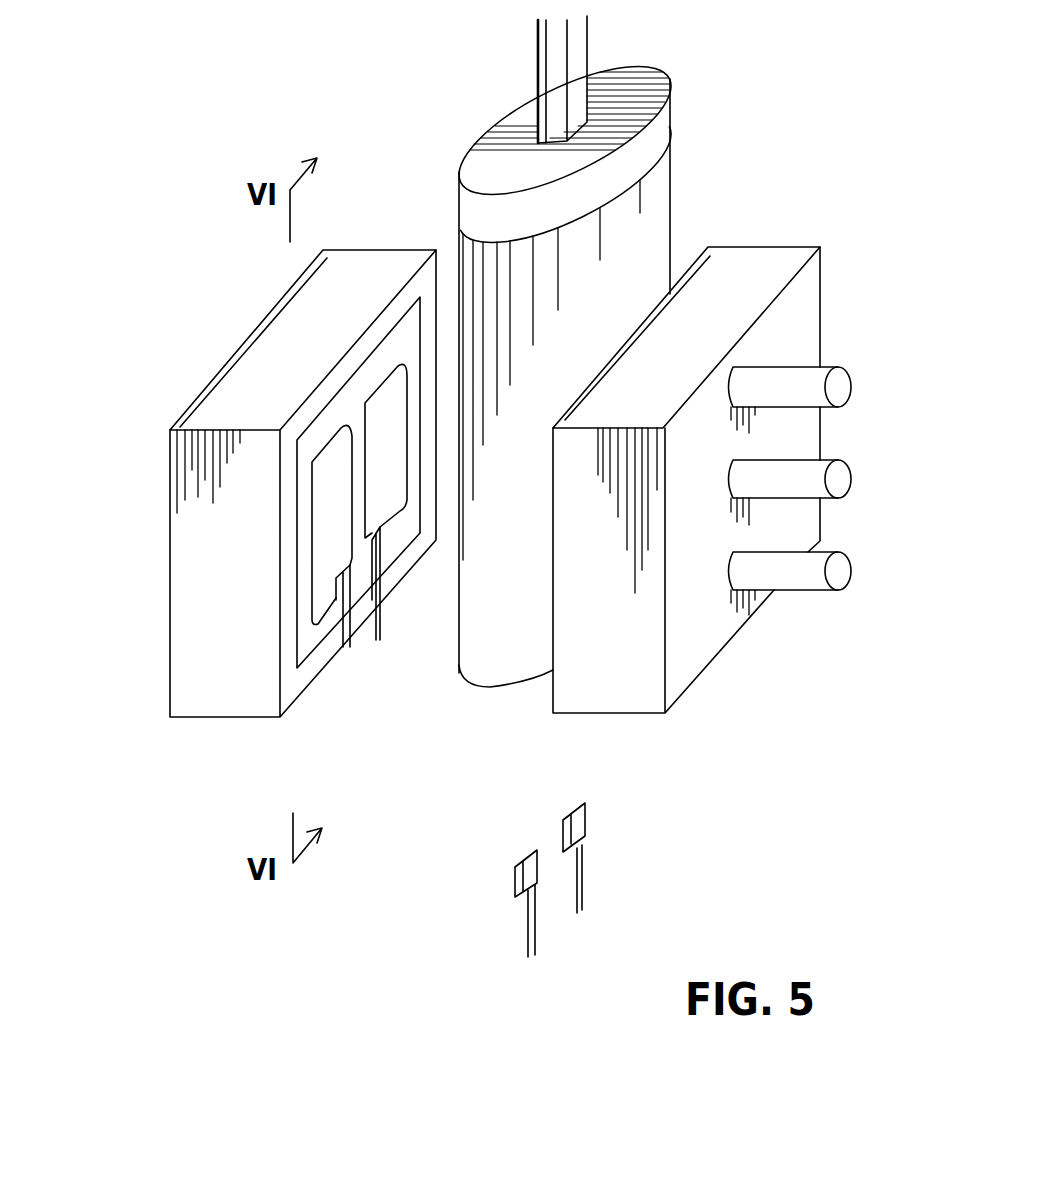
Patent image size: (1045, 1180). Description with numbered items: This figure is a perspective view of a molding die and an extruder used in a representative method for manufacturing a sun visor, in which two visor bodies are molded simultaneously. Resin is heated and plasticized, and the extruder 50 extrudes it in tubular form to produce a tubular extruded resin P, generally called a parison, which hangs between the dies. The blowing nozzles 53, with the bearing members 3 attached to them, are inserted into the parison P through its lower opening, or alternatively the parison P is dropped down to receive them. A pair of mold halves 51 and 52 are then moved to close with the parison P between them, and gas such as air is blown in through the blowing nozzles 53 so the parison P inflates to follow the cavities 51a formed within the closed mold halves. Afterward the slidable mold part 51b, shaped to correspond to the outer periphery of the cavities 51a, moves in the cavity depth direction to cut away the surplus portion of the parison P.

The extruder 50 is at (647, 68).
The tubular extruded resin (parison) P is at (488, 618).
The mold half 51 is at (257, 368).
The cavities 51a is at (333, 527).
The slidable mold part 51b is at (308, 650).
The mold half 52 is at (752, 263).
The bearing members 3 is at (567, 808).
The blowing nozzles 53 is at (578, 913).